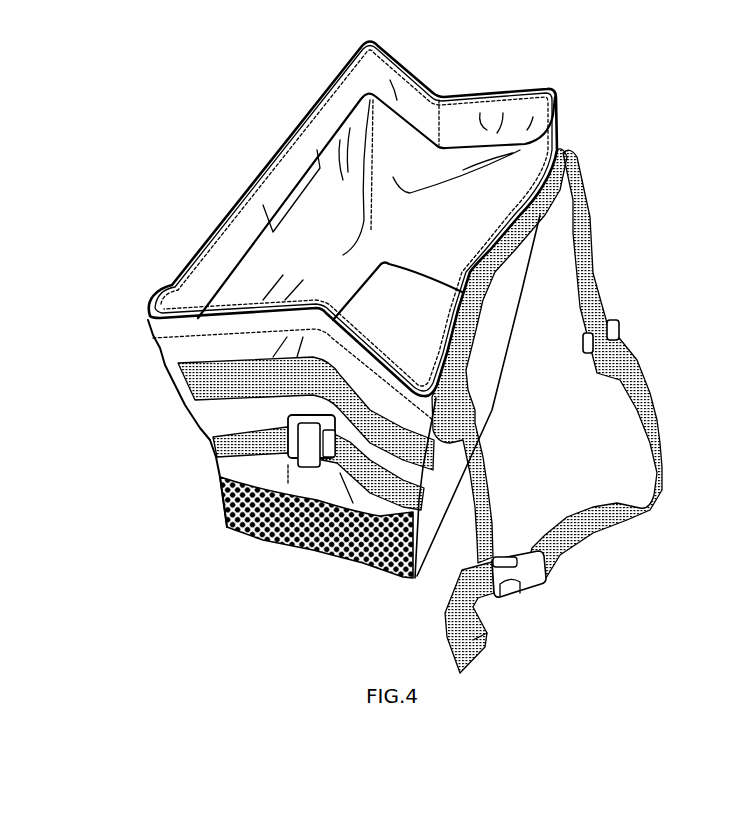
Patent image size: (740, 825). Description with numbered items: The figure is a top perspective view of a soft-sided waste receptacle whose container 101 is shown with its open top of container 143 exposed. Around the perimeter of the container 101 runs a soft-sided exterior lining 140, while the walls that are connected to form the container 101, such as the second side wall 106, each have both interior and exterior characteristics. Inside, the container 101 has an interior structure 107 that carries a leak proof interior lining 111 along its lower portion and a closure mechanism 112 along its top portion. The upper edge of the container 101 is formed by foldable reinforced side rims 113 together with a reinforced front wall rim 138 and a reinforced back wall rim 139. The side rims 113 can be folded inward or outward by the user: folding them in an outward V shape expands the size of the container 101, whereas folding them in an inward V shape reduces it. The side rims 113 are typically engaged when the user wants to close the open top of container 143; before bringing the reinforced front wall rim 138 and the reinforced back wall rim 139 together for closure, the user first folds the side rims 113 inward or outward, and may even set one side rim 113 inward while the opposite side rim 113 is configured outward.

The container 101 is at (523, 316).
The second side wall 106 is at (270, 345).
The interior structure 107 is at (343, 140).
The leak proof interior lining 111 is at (323, 220).
The closure mechanism 112 is at (290, 195).
The foldable reinforced side rims 113 is at (485, 130).
The reinforced front wall rim 138 is at (212, 272).
The reinforced back wall rim 139 is at (446, 346).
The soft-sided exterior lining 140 is at (252, 472).
The open top of container 143 is at (542, 146).